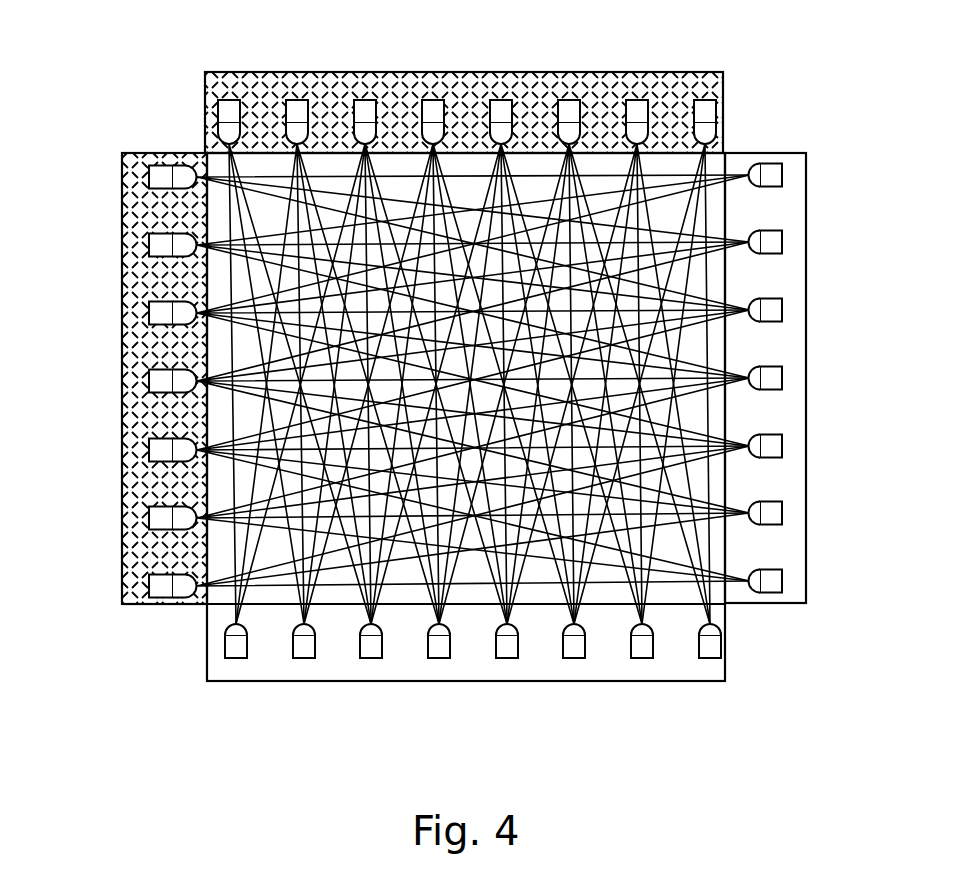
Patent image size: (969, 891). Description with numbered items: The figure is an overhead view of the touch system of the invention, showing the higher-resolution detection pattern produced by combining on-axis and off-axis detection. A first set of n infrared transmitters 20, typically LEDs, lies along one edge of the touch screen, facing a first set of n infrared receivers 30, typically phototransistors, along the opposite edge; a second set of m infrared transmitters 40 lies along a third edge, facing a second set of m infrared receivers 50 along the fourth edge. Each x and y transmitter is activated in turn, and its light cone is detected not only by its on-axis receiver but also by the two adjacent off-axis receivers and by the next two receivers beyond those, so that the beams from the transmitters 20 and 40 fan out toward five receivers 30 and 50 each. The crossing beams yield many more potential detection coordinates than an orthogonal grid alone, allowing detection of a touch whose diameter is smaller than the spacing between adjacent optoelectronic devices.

The first set of IR transmitters 20 is at (474, 73).
The first set of IR receivers 30 is at (473, 686).
The second set of IR transmitters 40 is at (108, 381).
The second set of IR receivers 50 is at (831, 378).